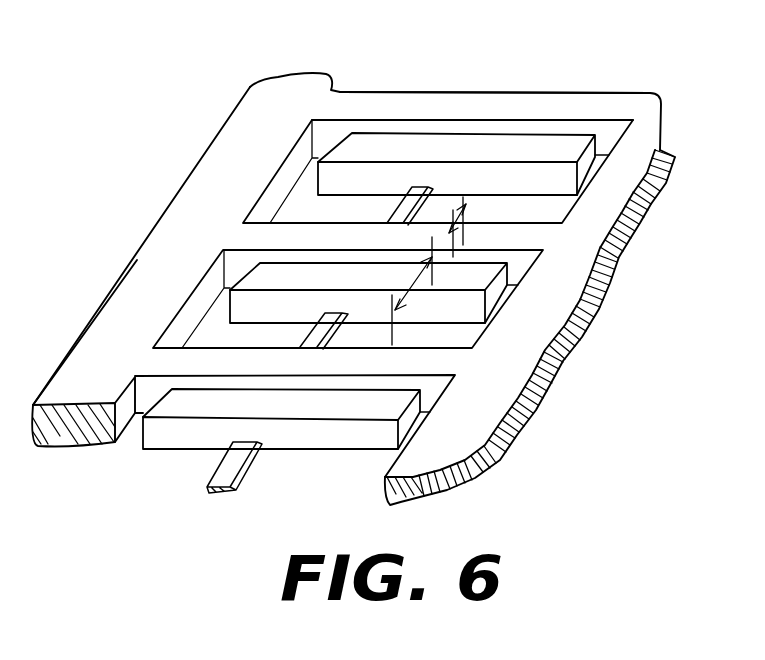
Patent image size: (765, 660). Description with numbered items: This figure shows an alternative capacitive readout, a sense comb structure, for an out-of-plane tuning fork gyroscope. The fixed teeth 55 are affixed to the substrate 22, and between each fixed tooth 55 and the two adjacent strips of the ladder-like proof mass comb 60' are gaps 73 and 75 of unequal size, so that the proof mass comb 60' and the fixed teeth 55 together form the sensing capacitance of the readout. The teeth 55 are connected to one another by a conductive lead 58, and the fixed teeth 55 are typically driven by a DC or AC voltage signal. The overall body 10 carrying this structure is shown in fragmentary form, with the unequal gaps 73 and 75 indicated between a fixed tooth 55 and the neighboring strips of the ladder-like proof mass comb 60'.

The body 10 is at (573, 261).
The substrate 22 is at (75, 292).
The fixed tooth 55 is at (272, 280).
The conductive lead 58 is at (223, 470).
The ladder-like proof mass comb 60' is at (481, 81).
The spacing dimension 73 is at (412, 277).
The offset dimension 75 is at (466, 216).